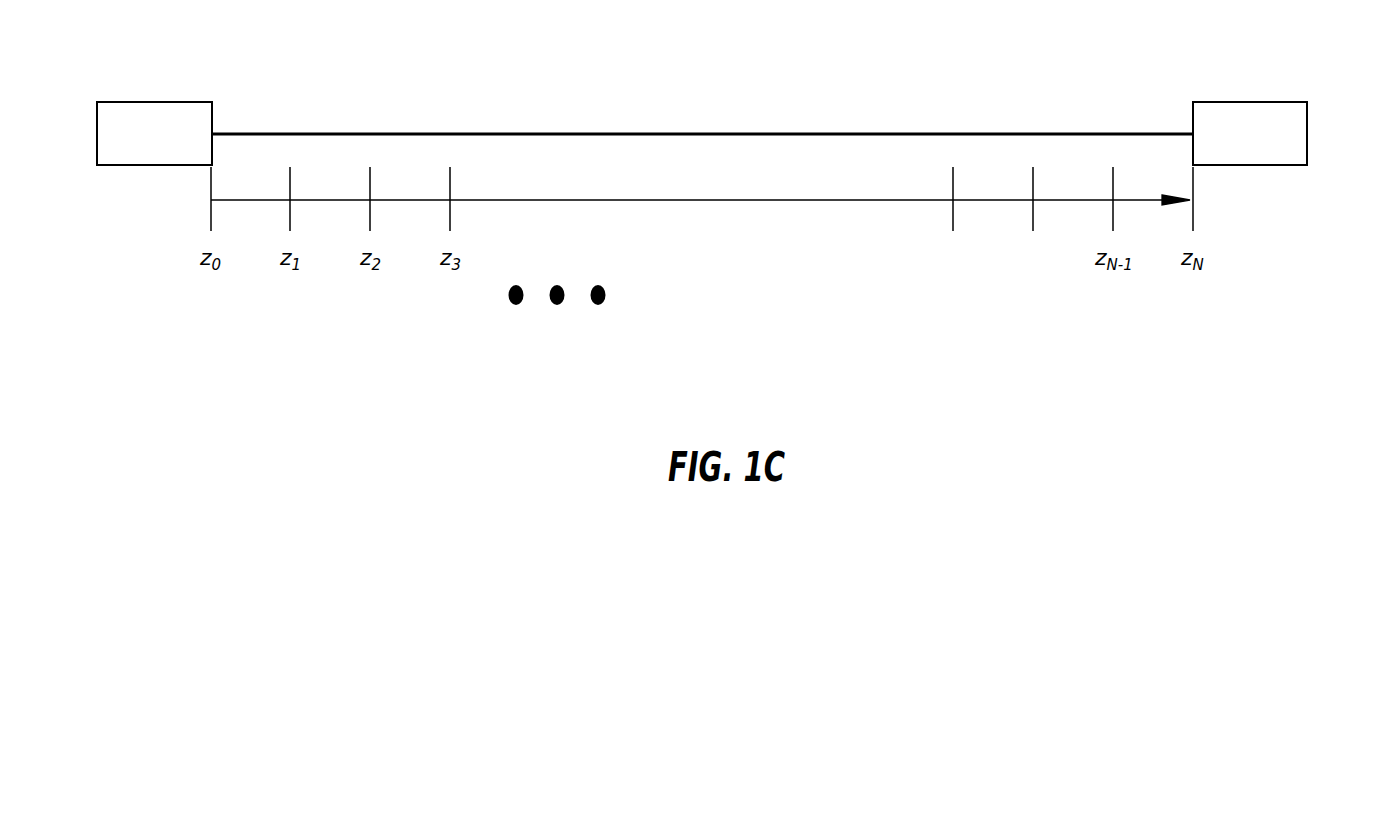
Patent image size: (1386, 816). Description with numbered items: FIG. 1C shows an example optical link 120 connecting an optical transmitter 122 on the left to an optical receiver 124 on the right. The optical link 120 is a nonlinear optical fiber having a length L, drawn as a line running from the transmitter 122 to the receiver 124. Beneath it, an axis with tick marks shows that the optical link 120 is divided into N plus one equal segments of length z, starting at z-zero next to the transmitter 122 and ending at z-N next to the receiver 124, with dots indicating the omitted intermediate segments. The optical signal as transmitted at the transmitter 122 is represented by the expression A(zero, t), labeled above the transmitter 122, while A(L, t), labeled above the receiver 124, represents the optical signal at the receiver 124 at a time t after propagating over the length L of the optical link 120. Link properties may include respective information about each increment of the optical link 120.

The optical link 120 is at (913, 115).
The optical transmitter 122 is at (97, 135).
The optical receiver 124 is at (1308, 135).